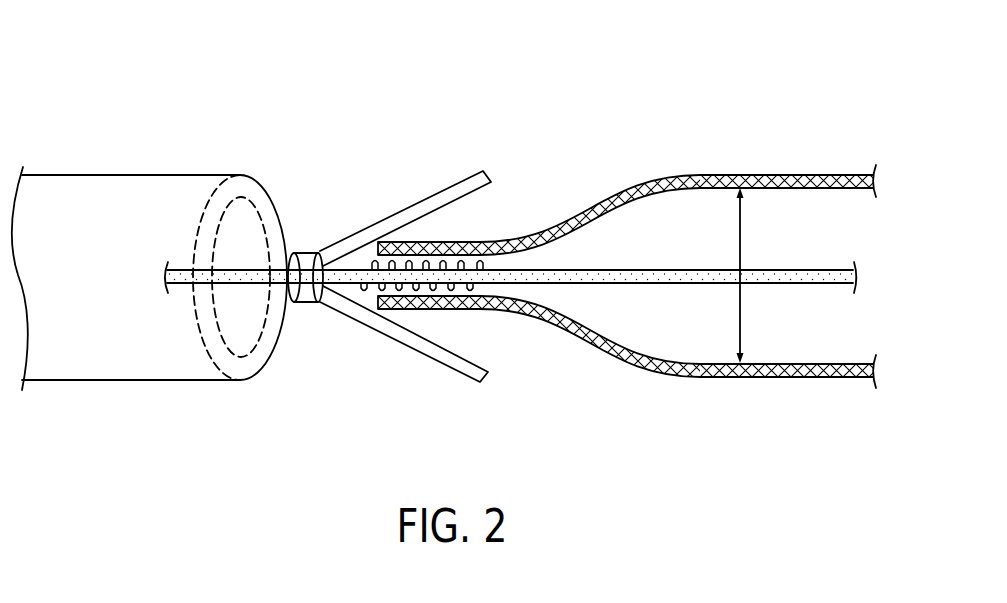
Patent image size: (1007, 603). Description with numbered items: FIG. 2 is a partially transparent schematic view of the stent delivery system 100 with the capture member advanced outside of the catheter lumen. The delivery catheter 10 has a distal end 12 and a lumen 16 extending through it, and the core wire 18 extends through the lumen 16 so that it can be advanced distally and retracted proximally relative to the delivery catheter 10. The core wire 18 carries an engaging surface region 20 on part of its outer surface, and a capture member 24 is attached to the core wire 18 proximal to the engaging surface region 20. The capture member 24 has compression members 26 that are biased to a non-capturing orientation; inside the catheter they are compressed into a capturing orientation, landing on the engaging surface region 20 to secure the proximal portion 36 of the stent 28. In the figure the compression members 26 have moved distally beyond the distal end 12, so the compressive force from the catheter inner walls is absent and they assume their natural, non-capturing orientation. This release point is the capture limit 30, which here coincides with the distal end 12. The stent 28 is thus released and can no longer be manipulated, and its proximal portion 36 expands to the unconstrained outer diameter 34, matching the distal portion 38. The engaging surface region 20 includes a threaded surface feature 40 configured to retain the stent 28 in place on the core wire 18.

The stent delivery system 100 is at (127, 76).
The delivery catheter 10 is at (78, 174).
The distal end 12 is at (243, 166).
The lumen 16 is at (268, 214).
The core wire 18 is at (638, 270).
The engaging surface region 20 is at (460, 256).
The capture member 24 is at (305, 322).
The compression member 26 is at (457, 183).
The stent 28 is at (784, 174).
The capture limit 30 is at (239, 395).
The relaxed state outer diameter 34 is at (742, 330).
The proximal portion 36 is at (456, 326).
The distal portion 38 is at (868, 398).
The surface feature 40 is at (478, 287).